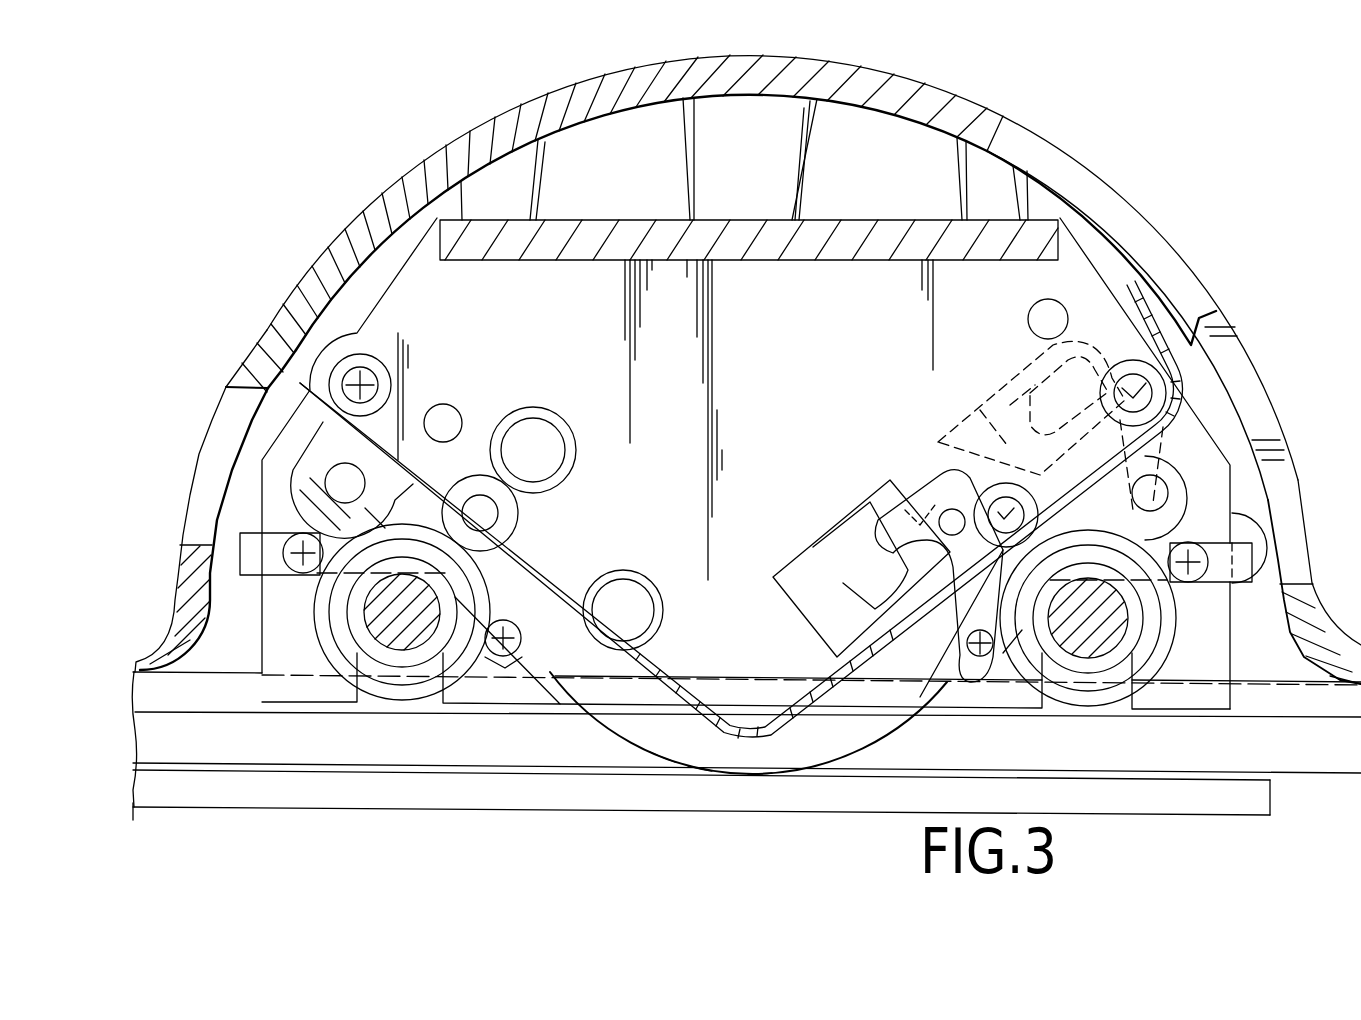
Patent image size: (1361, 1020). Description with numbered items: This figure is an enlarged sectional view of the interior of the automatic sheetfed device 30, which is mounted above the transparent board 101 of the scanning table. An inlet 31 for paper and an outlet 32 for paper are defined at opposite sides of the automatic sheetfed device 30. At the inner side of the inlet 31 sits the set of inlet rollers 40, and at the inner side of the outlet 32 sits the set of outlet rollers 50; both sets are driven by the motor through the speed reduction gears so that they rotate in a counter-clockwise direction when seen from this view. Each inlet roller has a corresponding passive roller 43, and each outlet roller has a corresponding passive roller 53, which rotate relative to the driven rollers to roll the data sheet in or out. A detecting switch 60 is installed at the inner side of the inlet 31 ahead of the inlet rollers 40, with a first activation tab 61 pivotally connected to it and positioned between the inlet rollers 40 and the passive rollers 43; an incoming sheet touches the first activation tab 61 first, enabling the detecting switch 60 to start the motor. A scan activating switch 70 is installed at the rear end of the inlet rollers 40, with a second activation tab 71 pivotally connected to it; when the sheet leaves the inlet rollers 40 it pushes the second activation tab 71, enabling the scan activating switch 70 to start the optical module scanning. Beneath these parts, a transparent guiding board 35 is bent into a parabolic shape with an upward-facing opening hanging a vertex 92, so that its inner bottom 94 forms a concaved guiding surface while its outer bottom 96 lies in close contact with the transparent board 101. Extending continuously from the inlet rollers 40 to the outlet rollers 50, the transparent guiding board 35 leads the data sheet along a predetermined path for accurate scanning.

The automatic sheetfed device 30 is at (941, 101).
The inlet 31 is at (1242, 358).
The outlet 32 is at (215, 432).
The transparent guiding board 35 is at (904, 721).
The set of inlet rollers 40 is at (1110, 698).
The passive roller 43 is at (1002, 494).
The set of outlet rollers 50 is at (344, 668).
The passive roller 53 is at (512, 528).
The detecting switch 60 is at (1005, 395).
The first activation tab 61 is at (1095, 357).
The scan activating switch 70 is at (832, 538).
The second activation tab 71 is at (924, 494).
The vertex 92 is at (760, 777).
The inner bottom 94 is at (668, 756).
The outer bottom 96 is at (700, 770).
The transparent board 101 is at (400, 797).